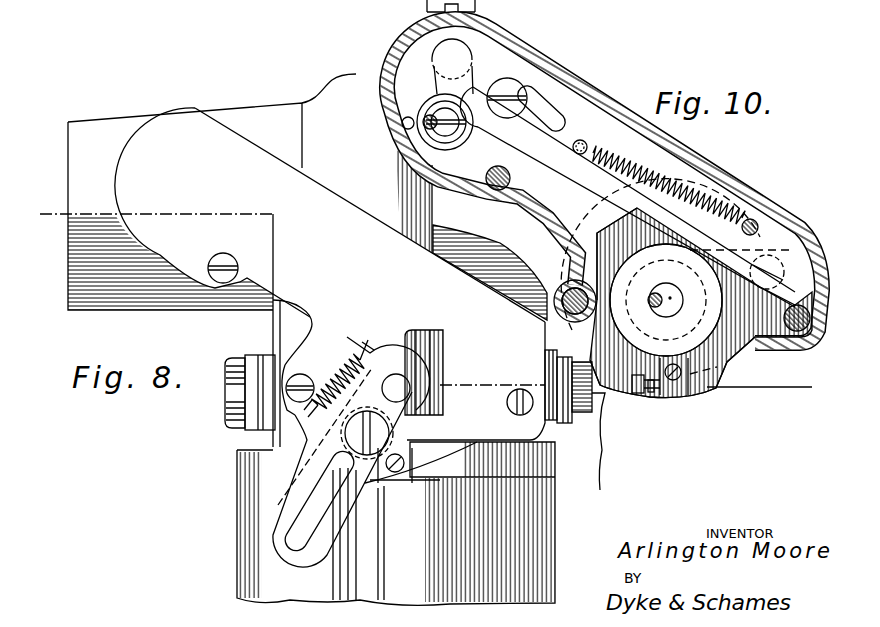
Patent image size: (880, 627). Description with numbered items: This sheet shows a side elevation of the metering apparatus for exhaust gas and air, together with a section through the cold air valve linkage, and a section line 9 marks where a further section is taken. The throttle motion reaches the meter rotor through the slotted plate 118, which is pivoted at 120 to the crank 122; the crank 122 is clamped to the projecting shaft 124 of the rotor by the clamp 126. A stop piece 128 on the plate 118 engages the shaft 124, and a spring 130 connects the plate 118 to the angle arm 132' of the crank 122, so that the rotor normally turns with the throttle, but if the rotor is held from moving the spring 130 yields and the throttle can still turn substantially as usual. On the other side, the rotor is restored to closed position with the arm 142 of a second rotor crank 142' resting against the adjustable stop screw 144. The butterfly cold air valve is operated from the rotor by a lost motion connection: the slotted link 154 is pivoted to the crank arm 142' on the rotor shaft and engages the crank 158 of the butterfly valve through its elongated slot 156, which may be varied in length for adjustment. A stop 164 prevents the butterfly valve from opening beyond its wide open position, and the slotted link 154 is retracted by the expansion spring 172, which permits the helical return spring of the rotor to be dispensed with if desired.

In FIG. 8, the section line 9- 9 is at (53, 242).
In FIG. 8, the slotted plate 118 is at (310, 545).
In FIG. 8, the pivot 120 is at (372, 470).
In FIG. 8, the crank 122 is at (402, 410).
In FIG. 8, the projecting shaft 124 is at (395, 383).
In FIG. 10, the projecting shaft 124 is at (672, 308).
In FIG. 8, the clamp 126 is at (425, 372).
In FIG. 8, the stop piece 128 is at (375, 376).
In FIG. 8, the spring 130 is at (304, 374).
In FIG. 8, the spring 132' is at (341, 364).
In FIG. 10, the arm 142 is at (604, 218).
In FIG. 10, the second rotor crank 142' is at (742, 287).
In FIG. 10, the adjustable stop screw 144 is at (643, 392).
In FIG. 10, the slotted link 154 is at (592, 175).
In FIG. 10, the elongated slot 156 is at (548, 112).
In FIG. 10, the crank 158 is at (489, 120).
In FIG. 10, the stop 164 is at (410, 116).
In FIG. 10, the expansion spring 172 is at (686, 170).